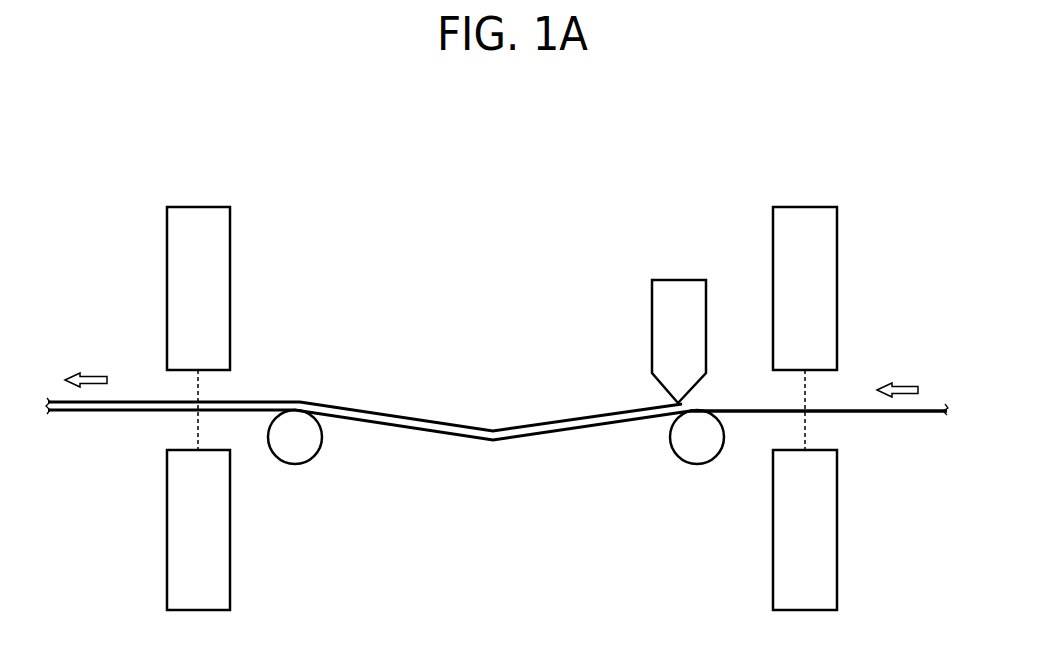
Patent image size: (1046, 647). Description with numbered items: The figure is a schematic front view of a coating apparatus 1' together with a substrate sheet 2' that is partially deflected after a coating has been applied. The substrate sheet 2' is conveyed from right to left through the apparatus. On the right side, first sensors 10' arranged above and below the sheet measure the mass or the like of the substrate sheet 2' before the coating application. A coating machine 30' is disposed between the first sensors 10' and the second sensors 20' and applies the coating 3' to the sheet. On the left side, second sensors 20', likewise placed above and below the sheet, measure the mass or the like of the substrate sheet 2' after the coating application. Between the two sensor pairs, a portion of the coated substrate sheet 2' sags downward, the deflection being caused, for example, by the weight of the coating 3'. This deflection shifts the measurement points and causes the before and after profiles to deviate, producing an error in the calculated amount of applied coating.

The coating apparatus 1' is at (497, 344).
The substrate sheet 2' is at (819, 444).
The coating 3' is at (368, 393).
The first sensors 10' is at (846, 408).
The second sensors 20' is at (239, 408).
The coating machine 30' is at (689, 308).